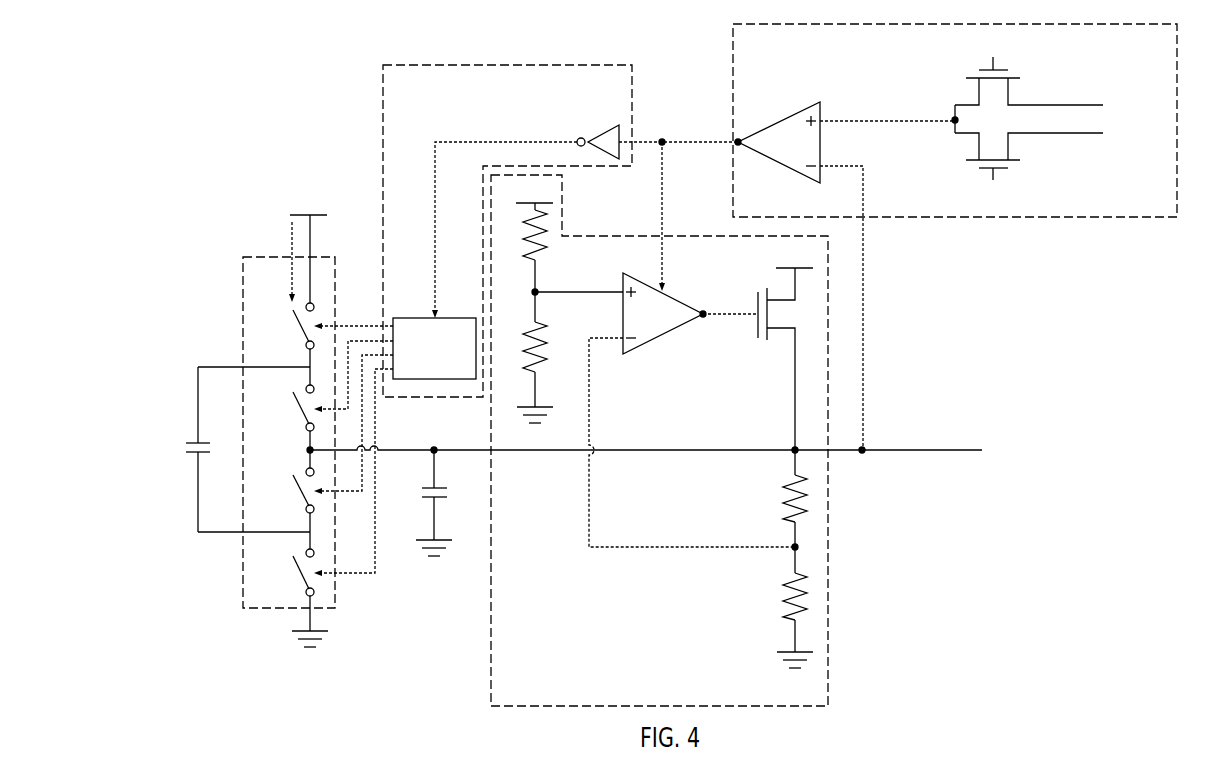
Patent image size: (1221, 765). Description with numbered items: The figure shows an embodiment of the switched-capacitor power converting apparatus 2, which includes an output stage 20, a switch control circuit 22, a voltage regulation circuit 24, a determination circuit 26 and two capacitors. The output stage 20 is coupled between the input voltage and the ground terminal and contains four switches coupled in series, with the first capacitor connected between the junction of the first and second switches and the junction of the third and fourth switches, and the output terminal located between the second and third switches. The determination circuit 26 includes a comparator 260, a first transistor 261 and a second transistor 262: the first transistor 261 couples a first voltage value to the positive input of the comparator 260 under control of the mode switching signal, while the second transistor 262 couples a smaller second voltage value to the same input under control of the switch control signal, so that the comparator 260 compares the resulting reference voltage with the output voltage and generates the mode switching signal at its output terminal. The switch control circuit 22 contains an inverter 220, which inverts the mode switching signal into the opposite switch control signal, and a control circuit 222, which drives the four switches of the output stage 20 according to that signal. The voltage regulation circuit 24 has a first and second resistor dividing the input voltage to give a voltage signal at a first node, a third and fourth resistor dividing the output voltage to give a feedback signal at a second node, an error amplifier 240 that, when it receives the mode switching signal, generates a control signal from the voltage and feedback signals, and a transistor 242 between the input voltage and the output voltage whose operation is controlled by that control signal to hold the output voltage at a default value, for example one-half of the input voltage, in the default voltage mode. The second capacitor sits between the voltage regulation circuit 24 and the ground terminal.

The switched-capacitor power converting apparatus 2 is at (198, 102).
The output stage 20 is at (243, 272).
The switch control circuit 22 is at (423, 92).
The inverter 220 is at (607, 136).
The control circuit 222 is at (453, 362).
The voltage regulation circuit 24 is at (530, 699).
The error amplifier 240 is at (675, 326).
The transistor 242 is at (749, 359).
The determination circuit 26 is at (771, 54).
The comparator 260 is at (805, 154).
The first transistor 261 is at (1022, 81).
The second transistor 262 is at (1022, 156).